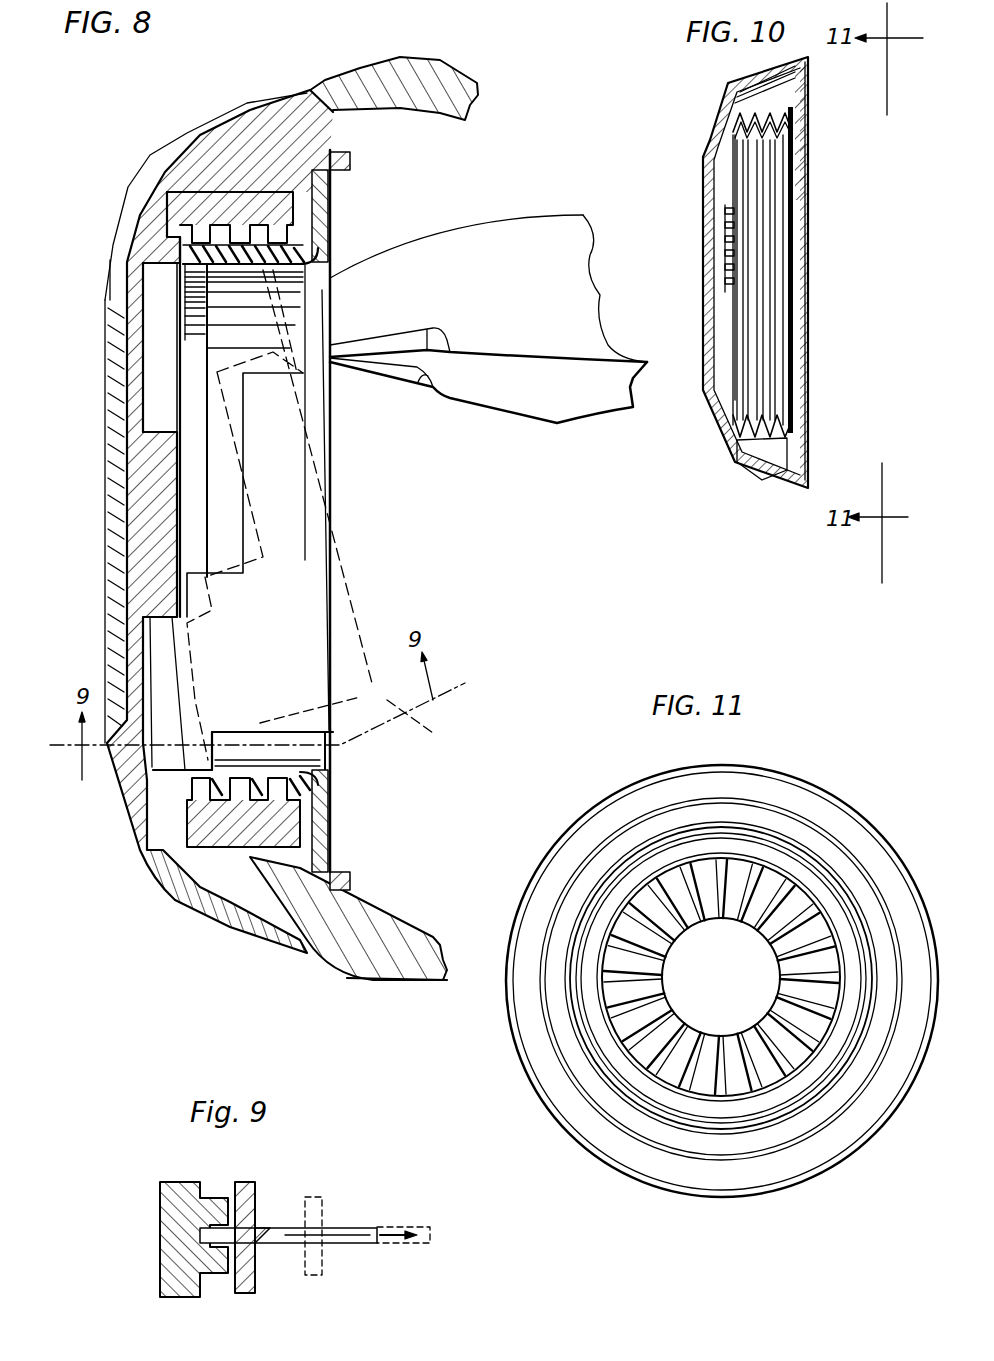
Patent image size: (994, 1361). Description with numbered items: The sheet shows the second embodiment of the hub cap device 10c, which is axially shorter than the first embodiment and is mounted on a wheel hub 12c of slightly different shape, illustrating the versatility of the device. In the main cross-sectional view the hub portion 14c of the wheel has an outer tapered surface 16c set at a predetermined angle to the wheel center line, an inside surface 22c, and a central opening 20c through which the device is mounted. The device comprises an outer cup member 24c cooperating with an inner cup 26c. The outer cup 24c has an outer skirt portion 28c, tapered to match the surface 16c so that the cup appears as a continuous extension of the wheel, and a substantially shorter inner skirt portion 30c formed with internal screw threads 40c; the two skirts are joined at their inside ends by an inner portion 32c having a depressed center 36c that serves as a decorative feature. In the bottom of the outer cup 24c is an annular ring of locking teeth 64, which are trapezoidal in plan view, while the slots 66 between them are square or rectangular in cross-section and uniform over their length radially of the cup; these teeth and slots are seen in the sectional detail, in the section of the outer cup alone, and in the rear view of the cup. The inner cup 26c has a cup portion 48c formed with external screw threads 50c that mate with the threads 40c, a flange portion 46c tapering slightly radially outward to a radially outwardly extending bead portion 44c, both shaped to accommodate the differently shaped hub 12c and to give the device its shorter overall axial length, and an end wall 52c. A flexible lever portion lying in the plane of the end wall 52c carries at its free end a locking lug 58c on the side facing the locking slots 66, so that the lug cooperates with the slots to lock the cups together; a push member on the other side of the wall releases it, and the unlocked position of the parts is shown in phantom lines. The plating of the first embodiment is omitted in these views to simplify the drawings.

In FIG. 8, the hub cap device 10c is at (126, 185).
In FIG. 8, the wheel hub 12c is at (397, 47).
In FIG. 8, the hub portion 14c is at (350, 93).
In FIG. 8, the tapered surface 16c is at (377, 980).
In FIG. 8, the central opening 20c is at (227, 190).
In FIG. 8, the inside hub surface 22c is at (357, 920).
In FIG. 8, the outer cup member 24c is at (120, 854).
In FIG. 10, the outer cup member 24c is at (696, 429).
In FIG. 11, the outer cup member 24c is at (578, 806).
In FIG. 8, the inner cup 26c is at (340, 814).
In FIG. 8, the outer skirt portion 28c is at (267, 118).
In FIG. 11, the outer skirt portion 28c is at (540, 874).
In FIG. 8, the inner skirt portion 30c is at (220, 207).
In FIG. 10, the inner skirt portion 30c is at (793, 423).
In FIG. 8, the inner portion 32c is at (133, 450).
In FIG. 8, the depressed center 36c is at (127, 553).
In FIG. 8, the internal screw threads 40c is at (300, 840).
In FIG. 8, the bead portion 44c is at (337, 167).
In FIG. 8, the flange portion 46c is at (317, 208).
In FIG. 8, the inner cup portion 48c is at (320, 287).
In FIG. 8, the external screw threads 50c is at (305, 758).
In FIG. 8, the end wall 52c is at (197, 297).
In FIG. 8, the locking lug 58c is at (170, 677).
In FIG. 9, the locking teeth 64 is at (213, 1207).
In FIG. 11, the locking teeth 64 is at (830, 961).
In FIG. 8, the slots 66 is at (163, 362).
In FIG. 9, the slots 66 is at (210, 1237).
In FIG. 10, the slots 66 is at (727, 283).
In FIG. 11, the slots 66 is at (784, 882).